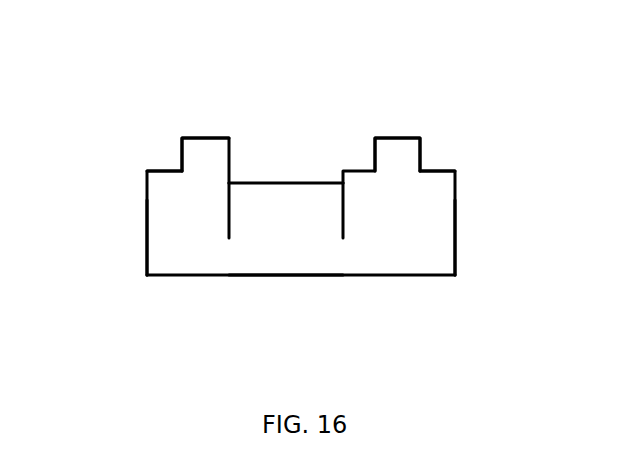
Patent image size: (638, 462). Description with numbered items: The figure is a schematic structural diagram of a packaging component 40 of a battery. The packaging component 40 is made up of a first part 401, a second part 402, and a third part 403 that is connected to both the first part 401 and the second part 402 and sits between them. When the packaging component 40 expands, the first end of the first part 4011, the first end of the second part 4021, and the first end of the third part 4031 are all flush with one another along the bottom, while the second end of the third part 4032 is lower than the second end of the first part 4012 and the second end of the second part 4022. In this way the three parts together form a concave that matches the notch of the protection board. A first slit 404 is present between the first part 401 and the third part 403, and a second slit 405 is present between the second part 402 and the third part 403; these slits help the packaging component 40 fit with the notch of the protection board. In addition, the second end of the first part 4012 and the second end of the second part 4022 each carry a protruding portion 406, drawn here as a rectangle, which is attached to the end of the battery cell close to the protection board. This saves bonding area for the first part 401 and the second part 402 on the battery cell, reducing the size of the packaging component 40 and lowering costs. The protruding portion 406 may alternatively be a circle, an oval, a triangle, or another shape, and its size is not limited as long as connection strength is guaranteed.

The packaging component 40 is at (124, 72).
The first part 401 is at (167, 210).
The second part 402 is at (428, 210).
The third part 403 is at (263, 245).
The first slit 404 is at (231, 202).
The second slit 405 is at (346, 213).
The protruding portion 406 is at (206, 137).
The first end of the first part 4011 is at (178, 278).
The second end of the first part 4012 is at (176, 163).
The first end of the second part 4021 is at (420, 278).
The second end of the second part 4022 is at (424, 148).
The first end of the third part 4031 is at (312, 278).
The second end of the third part 4032 is at (290, 182).